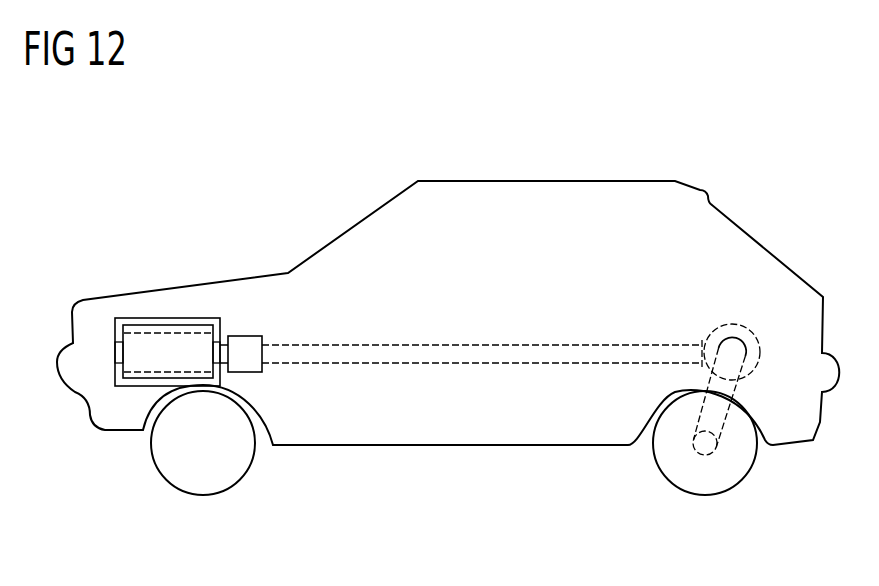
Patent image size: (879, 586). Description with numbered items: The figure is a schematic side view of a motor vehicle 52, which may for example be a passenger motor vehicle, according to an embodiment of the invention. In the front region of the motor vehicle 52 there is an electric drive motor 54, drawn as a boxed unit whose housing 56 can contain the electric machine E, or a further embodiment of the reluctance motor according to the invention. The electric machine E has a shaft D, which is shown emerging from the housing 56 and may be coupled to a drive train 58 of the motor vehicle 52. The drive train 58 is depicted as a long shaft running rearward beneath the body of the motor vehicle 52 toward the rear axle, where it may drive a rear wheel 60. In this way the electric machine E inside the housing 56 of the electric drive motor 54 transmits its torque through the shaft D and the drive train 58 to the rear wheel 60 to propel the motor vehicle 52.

The motor vehicle 52 is at (537, 181).
The electric drive motor 54 is at (197, 306).
The housing 56 is at (130, 318).
The electric machine E is at (167, 325).
The shaft D is at (222, 342).
The drive train 58 is at (505, 345).
The rear wheel 60 is at (707, 485).